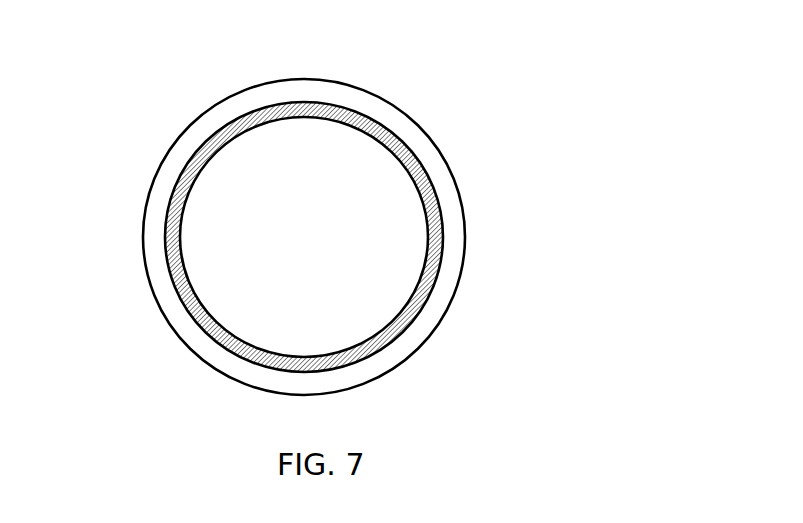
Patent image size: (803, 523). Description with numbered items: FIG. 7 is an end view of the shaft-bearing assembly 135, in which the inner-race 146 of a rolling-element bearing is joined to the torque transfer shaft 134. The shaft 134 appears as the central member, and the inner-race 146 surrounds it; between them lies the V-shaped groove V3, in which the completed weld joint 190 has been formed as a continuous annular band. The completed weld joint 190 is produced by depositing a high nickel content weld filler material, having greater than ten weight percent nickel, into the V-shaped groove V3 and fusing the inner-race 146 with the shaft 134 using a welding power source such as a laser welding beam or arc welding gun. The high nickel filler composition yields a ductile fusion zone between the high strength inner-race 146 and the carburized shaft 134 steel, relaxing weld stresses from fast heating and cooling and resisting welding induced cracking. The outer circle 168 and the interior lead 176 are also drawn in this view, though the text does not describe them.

The outer wall 168 is at (378, 106).
The completed weld joint 190 is at (438, 202).
The inner passage 176 is at (297, 170).
The inner-race 146 is at (157, 213).
The shaft 134 is at (273, 303).
The shaft-bearing assembly 135 is at (525, 258).
The V-shaped groove V3 is at (405, 318).